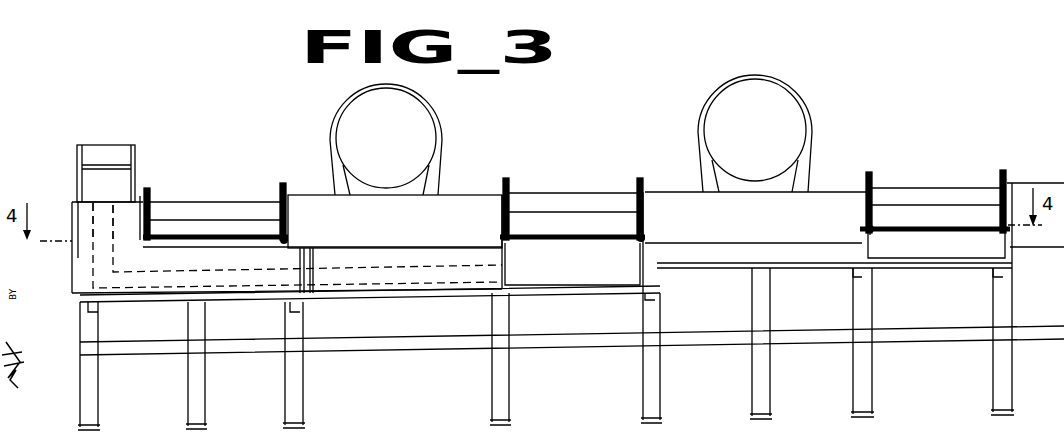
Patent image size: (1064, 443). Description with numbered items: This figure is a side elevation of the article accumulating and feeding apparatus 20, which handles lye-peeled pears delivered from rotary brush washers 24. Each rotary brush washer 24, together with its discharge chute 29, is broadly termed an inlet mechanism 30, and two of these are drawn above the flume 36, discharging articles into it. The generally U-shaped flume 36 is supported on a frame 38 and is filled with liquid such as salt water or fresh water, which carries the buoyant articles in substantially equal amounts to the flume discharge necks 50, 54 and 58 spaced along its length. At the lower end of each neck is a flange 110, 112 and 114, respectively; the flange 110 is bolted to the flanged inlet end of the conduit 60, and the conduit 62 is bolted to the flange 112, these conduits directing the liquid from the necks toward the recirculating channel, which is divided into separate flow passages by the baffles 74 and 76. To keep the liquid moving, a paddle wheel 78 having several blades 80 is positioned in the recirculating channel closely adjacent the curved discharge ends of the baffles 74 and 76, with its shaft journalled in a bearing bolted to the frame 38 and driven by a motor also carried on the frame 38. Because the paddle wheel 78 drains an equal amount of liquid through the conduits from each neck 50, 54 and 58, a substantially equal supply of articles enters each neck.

The article accumulating and feeding apparatus 20 is at (955, 99).
The rotary brush washer 24 is at (441, 128).
The discharge chute 29 is at (440, 163).
The inlet mechanism 30 is at (438, 100).
The flume 36 is at (683, 183).
The frame 38 is at (553, 334).
The flume discharge neck 50 is at (927, 195).
The flume discharge neck 54 is at (549, 200).
The flume discharge neck 58 is at (237, 208).
The conduit 60 is at (398, 258).
The conduit 62 is at (411, 280).
The baffle 74 is at (112, 216).
The baffle 76 is at (92, 226).
The paddle wheel 78 is at (116, 140).
The blades 80 is at (128, 174).
The flange 110 is at (870, 226).
The flange 112 is at (643, 234).
The flange 114 is at (286, 240).